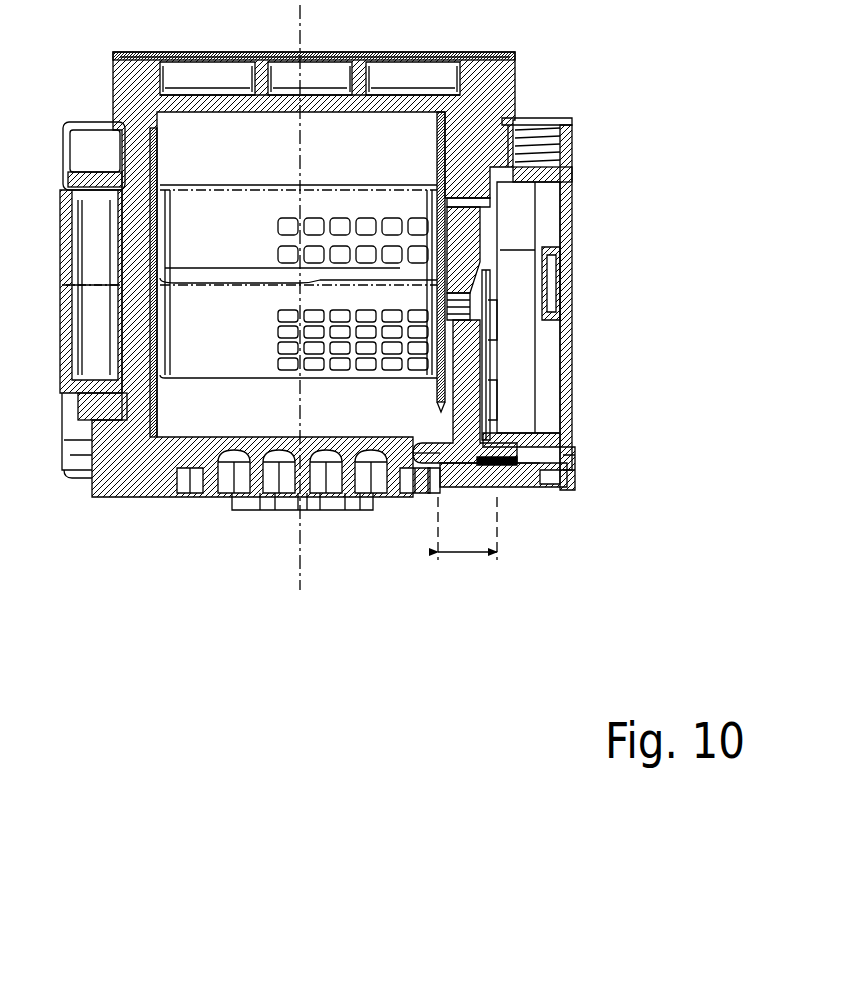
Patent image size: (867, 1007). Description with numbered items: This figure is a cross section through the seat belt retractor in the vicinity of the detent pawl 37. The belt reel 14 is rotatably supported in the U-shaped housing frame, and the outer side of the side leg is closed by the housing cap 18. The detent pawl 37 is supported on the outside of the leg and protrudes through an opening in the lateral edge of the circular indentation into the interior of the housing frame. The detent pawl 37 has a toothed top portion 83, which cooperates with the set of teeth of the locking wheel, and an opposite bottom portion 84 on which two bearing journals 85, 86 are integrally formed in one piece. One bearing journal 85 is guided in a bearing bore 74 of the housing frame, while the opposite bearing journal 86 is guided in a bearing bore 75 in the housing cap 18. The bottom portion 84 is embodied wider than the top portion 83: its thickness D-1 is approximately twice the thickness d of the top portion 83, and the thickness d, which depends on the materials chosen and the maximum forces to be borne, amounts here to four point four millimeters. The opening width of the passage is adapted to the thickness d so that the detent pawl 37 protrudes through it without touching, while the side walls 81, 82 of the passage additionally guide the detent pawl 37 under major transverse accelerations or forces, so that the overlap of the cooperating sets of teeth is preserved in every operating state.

The belt reel 14 is at (352, 185).
The housing cap 18 is at (567, 207).
The detent pawl 37 is at (490, 371).
The bearing bore 74 is at (418, 493).
The bearing bore 75 is at (549, 451).
The side wall 81 is at (455, 330).
The side wall 82 is at (567, 276).
The toothed top portion 83 is at (460, 318).
The bottom portion 84 is at (465, 482).
The bearing journal 85 is at (426, 482).
The bearing journal 86 is at (516, 487).
The thickness of the top portion d is at (478, 333).
The thickness of the bottom portion D-1 is at (467, 547).